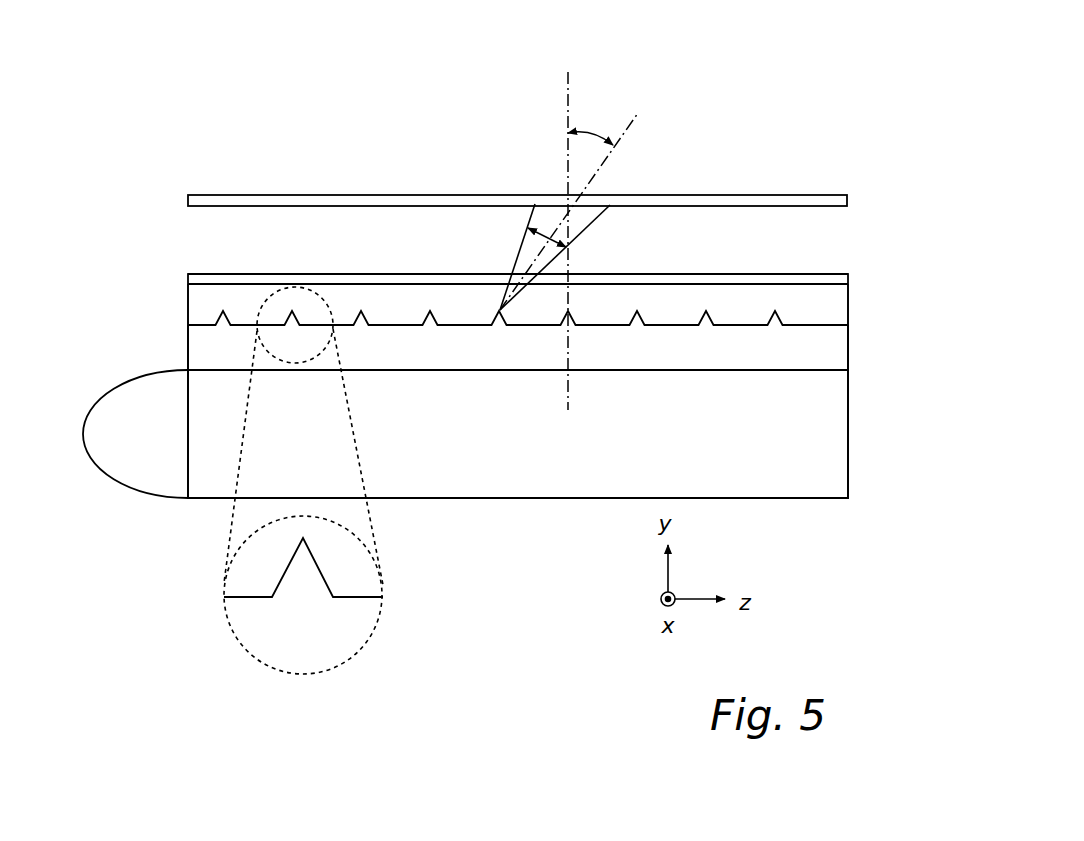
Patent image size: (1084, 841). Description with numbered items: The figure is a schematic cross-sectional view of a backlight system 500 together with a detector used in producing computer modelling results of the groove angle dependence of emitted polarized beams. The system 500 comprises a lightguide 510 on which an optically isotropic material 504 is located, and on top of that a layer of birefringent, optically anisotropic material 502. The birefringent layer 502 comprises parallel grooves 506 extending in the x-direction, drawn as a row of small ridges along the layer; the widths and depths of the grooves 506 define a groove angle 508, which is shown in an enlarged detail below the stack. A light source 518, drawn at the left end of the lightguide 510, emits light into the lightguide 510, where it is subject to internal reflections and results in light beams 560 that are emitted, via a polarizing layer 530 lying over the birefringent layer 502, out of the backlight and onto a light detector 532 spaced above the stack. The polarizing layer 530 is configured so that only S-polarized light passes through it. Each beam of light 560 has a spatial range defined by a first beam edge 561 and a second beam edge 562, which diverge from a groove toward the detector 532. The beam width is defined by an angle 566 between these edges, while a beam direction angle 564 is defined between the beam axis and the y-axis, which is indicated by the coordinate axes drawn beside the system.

The backlight system 500 is at (175, 253).
The layer of birefringent material 502 is at (501, 305).
The optically isotropic material 504 is at (843, 345).
The parallel grooves 506 is at (220, 313).
The groove angle 508 is at (287, 580).
The lightguide 510 is at (840, 440).
The light source 518 is at (132, 473).
The polarizing layer 530 is at (848, 279).
The light detector 532 is at (847, 203).
The light beams 560 is at (547, 222).
The first beam edge 561 is at (527, 218).
The second beam edge 562 is at (607, 212).
The beam direction angle 564 is at (590, 137).
The beam width angle 566 is at (550, 237).